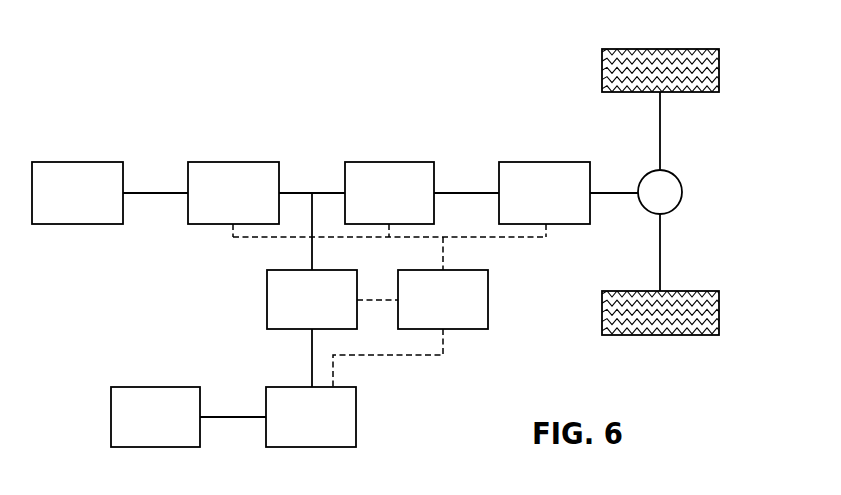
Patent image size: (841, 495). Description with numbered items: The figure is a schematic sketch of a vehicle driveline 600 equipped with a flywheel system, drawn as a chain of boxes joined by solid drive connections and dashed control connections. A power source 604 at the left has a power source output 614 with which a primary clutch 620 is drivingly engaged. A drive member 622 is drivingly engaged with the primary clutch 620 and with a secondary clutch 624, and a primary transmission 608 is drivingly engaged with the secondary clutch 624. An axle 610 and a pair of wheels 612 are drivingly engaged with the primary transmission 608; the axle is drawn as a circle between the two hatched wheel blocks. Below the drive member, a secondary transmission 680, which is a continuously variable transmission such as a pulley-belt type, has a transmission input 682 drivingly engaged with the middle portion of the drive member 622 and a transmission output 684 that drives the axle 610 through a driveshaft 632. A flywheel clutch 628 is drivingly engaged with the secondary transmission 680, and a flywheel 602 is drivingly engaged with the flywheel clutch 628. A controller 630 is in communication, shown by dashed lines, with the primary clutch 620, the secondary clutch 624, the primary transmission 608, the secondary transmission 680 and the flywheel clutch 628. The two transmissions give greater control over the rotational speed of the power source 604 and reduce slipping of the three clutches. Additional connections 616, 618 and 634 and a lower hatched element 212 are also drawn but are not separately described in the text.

The vehicle driveline 600 is at (162, 72).
The flywheel 602 is at (111, 415).
The power source 604 is at (77, 162).
The primary transmission 608 is at (545, 162).
The axle 610 is at (661, 250).
The wheels 612 is at (659, 49).
The power source output 614 is at (155, 192).
The connection line 616 is at (498, 192).
The connection line 618 is at (592, 192).
The primary clutch 620 is at (233, 162).
The drive member 622 is at (296, 192).
The secondary clutch 624 is at (389, 162).
The flywheel clutch 628 is at (357, 416).
The controller 630 is at (489, 300).
The driveshaft 632 is at (615, 194).
The connection line 634 is at (236, 418).
The secondary transmission 680 is at (267, 300).
The transmission input 682 is at (311, 268).
The transmission output 684 is at (311, 331).
The reservoir 212 is at (660, 335).